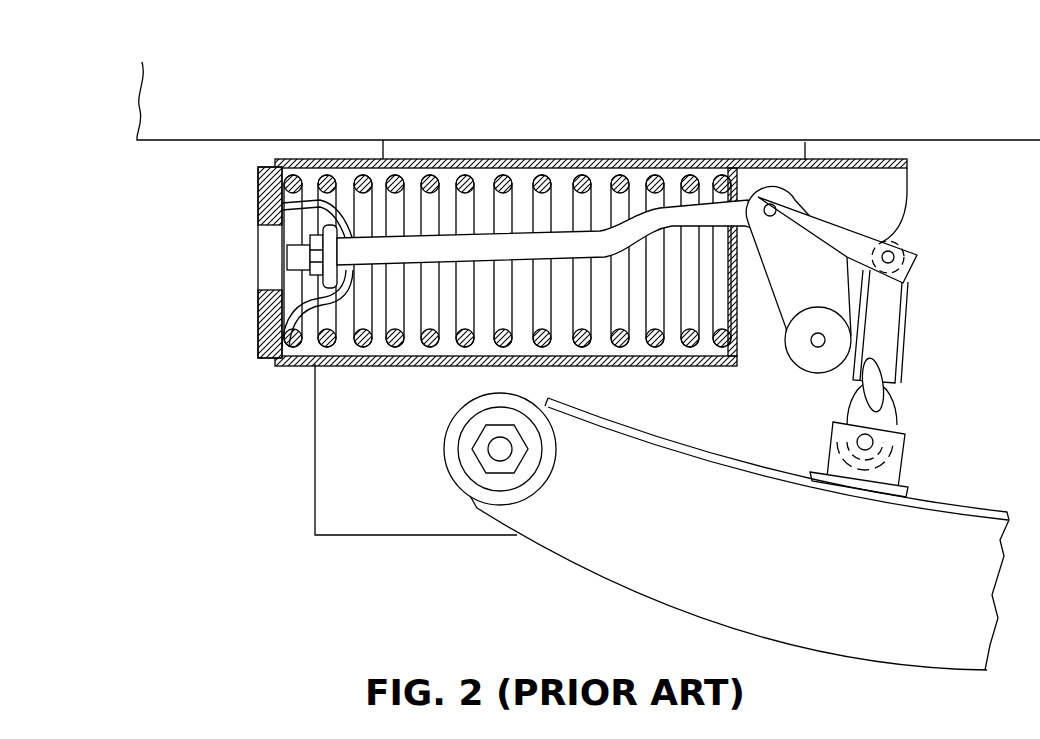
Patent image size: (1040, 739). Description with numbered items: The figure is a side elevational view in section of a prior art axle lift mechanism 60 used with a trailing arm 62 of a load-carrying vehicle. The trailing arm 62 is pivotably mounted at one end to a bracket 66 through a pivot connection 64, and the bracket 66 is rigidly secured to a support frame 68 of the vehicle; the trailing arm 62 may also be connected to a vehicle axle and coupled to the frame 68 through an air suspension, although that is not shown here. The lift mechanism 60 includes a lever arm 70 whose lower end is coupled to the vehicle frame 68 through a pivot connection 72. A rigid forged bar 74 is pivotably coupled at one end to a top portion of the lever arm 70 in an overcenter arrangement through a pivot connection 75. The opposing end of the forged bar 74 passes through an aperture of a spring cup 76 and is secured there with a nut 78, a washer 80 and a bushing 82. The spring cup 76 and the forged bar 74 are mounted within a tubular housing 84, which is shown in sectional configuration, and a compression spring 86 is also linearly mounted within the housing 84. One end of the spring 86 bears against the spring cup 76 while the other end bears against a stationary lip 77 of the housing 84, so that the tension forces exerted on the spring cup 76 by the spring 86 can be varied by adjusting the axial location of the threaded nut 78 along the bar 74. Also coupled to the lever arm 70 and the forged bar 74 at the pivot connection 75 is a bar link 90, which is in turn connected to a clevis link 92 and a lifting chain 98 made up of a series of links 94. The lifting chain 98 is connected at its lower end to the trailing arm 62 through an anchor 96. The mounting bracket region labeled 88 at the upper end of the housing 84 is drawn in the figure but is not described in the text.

The lift mechanism 60 is at (913, 128).
The trailing arm 62 is at (580, 548).
The pivot connection 64 is at (458, 475).
The bracket 66 is at (315, 490).
The support frame 68 is at (192, 140).
The lever arm 70 is at (768, 335).
The pivot connection 72 is at (797, 368).
The forged bar 74 is at (590, 238).
The pivot connection 75 is at (802, 193).
The spring cup 76 is at (333, 215).
The stationary lip 77 is at (740, 190).
The nut 78 is at (308, 242).
The washer 80 is at (327, 273).
The bushing 82 is at (345, 237).
The tubular housing 84 is at (485, 158).
The compression spring 86 is at (545, 170).
The mounting bracket 88 is at (783, 177).
The bar link 90 is at (850, 228).
The clevis link 92 is at (935, 295).
The links 94 is at (890, 400).
The anchor 96 is at (925, 447).
The lifting chain 98 is at (920, 412).